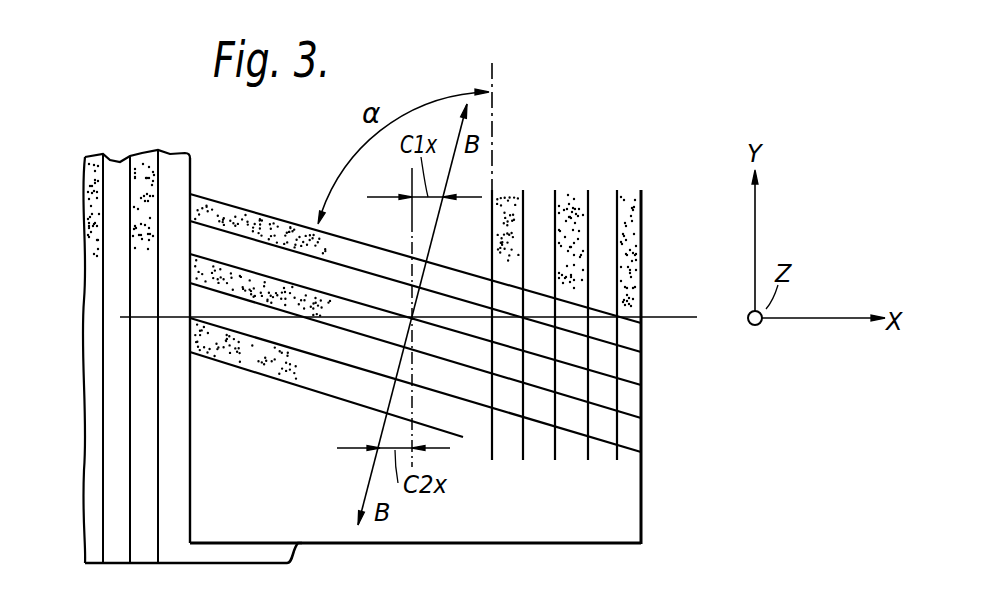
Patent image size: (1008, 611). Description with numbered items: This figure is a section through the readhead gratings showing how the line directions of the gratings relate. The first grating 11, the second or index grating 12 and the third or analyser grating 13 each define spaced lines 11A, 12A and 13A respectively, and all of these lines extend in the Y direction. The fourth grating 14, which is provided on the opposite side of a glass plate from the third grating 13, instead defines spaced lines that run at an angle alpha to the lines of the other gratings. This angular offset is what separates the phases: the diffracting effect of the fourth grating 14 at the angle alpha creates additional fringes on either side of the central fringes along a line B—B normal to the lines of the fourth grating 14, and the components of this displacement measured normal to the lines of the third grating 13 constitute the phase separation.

The first grating 11 is at (132, 178).
The spaced lines of the first grating 11A is at (154, 333).
The second grating 12 is at (628, 244).
The spaced lines of the second grating 12A is at (627, 198).
The third grating 13 is at (637, 325).
The spaced lines of the third grating 13A is at (666, 217).
The fourth grating 14 is at (223, 210).